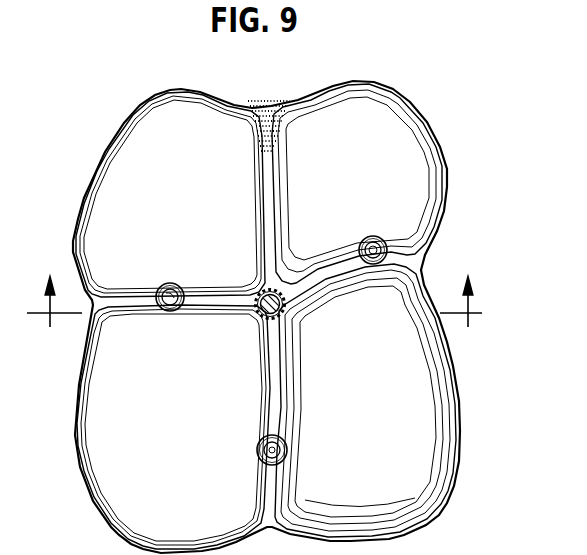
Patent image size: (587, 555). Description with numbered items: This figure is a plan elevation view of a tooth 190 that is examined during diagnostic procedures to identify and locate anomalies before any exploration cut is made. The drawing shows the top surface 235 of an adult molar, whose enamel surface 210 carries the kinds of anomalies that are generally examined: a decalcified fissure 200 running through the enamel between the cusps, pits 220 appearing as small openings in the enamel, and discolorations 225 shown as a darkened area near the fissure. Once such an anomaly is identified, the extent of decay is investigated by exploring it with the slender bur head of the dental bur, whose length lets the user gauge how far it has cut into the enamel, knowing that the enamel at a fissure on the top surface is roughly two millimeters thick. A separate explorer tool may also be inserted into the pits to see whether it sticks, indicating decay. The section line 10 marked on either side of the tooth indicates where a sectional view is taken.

The tooth 190 is at (462, 187).
The decalcified fissure 200 is at (260, 176).
The discolorations 225 is at (262, 108).
The pits 220 is at (376, 238).
The enamel surface 210 is at (183, 442).
The top surface 235 is at (410, 395).
The section line 10- 10 is at (257, 279).